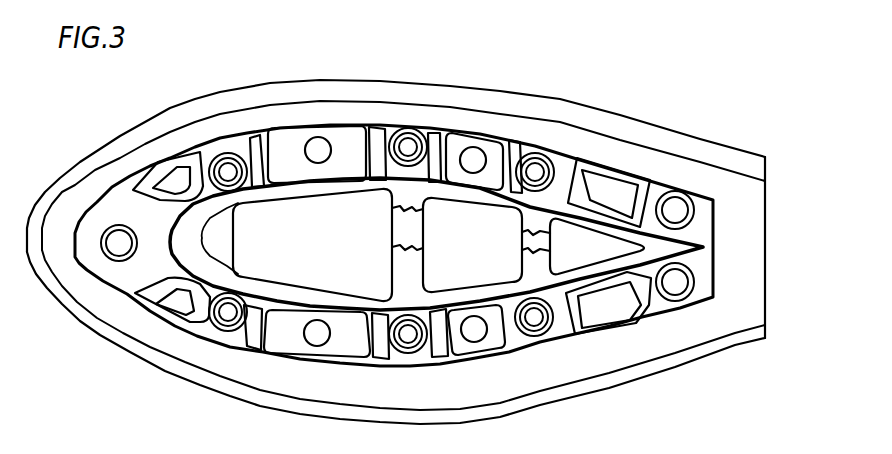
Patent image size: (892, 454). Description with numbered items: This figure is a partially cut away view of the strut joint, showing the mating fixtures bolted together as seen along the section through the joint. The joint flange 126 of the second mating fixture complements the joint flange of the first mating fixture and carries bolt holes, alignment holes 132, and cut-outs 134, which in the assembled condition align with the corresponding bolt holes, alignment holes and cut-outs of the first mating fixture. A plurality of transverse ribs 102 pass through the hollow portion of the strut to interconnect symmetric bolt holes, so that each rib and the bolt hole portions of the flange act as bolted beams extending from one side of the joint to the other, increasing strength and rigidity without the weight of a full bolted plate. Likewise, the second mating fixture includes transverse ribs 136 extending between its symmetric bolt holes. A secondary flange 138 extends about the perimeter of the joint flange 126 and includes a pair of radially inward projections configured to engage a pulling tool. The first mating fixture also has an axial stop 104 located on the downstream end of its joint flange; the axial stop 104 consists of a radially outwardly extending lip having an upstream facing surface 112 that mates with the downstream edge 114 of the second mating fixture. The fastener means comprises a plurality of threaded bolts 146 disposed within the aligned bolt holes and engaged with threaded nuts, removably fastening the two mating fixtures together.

The transverse ribs 102 is at (400, 228).
The axial stop 104 is at (767, 278).
The upstream facing surface 112 is at (755, 333).
The downstream edge 114 is at (766, 205).
The joint flange 126 is at (365, 113).
The alignment holes 132 is at (323, 139).
The cut-outs 134 is at (173, 182).
The transverse ribs 136 is at (518, 262).
The secondary flange 138 is at (425, 95).
The threaded bolts 146 is at (418, 133).